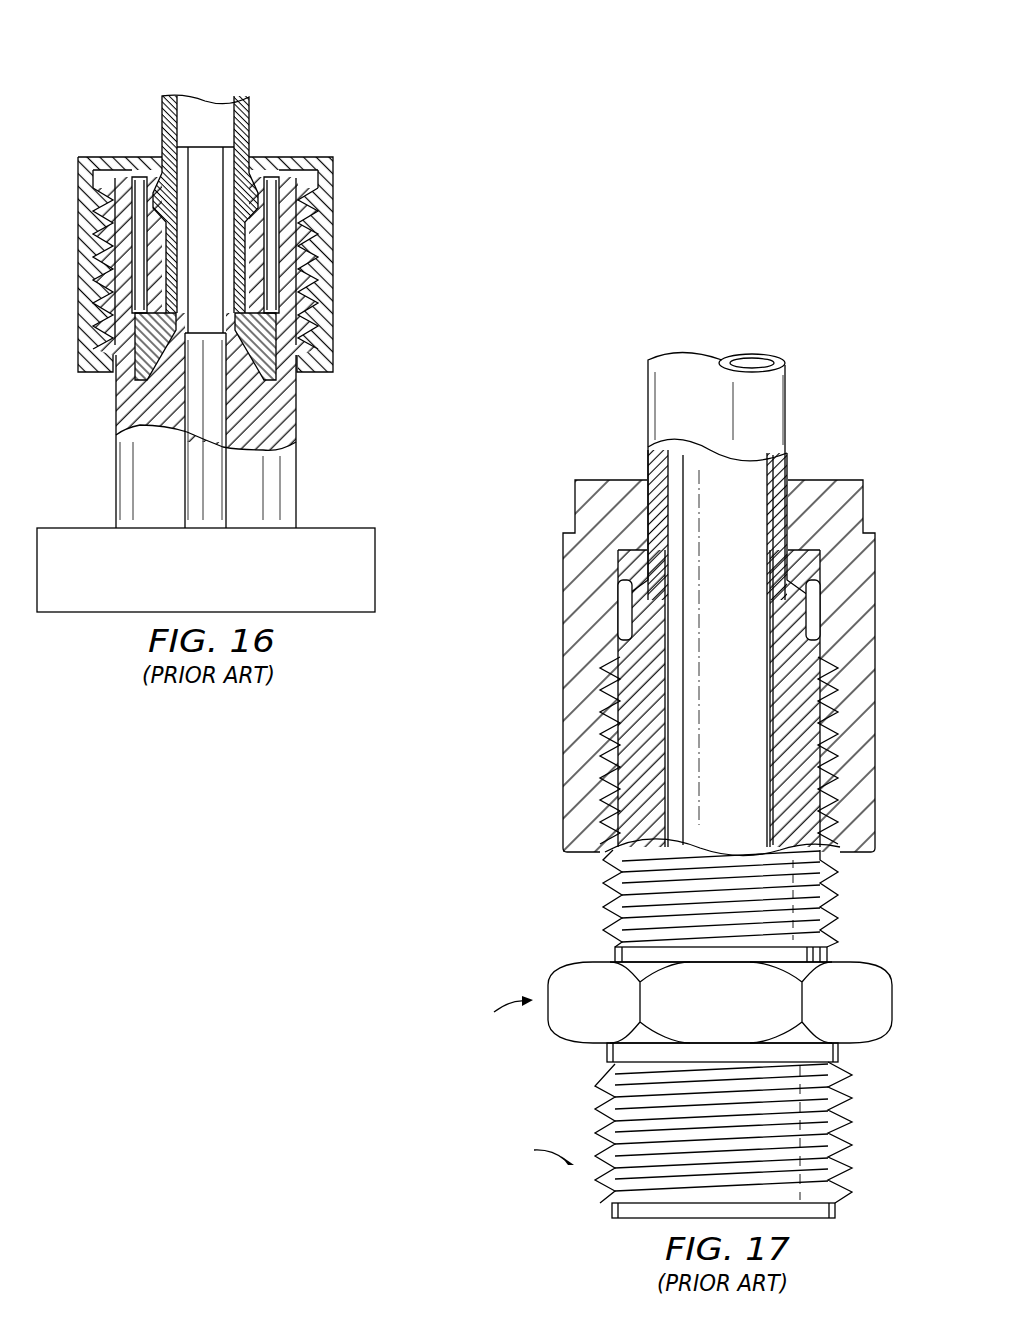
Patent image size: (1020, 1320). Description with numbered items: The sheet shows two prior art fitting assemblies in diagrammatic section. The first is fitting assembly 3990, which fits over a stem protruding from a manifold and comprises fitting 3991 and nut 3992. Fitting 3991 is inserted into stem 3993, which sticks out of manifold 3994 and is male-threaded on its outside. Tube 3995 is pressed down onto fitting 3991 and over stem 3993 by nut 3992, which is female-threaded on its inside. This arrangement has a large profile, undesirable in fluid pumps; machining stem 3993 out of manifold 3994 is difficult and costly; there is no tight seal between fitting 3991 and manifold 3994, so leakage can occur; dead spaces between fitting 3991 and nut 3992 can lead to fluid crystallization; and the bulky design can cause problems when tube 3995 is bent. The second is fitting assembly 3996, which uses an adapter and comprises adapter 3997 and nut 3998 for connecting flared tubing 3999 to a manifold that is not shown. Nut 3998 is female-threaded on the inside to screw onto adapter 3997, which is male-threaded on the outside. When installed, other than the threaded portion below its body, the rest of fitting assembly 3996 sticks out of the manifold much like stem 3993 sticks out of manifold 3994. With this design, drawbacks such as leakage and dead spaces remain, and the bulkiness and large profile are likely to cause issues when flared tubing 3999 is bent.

In FIG. 16, the fitting assembly 3990 is at (157, 64).
In FIG. 16, the fitting 3991 is at (215, 172).
In FIG. 16, the nut 3992 is at (298, 156).
In FIG. 16, the stem 3993 is at (115, 461).
In FIG. 16, the manifold 3994 is at (232, 584).
In FIG. 16, the tube 3995 is at (160, 122).
In FIG. 17, the fitting assembly 3996 is at (819, 330).
In FIG. 17, the adapter 3997 is at (578, 902).
In FIG. 17, the nut 3998 is at (831, 479).
In FIG. 17, the flared tubing 3999 is at (647, 406).